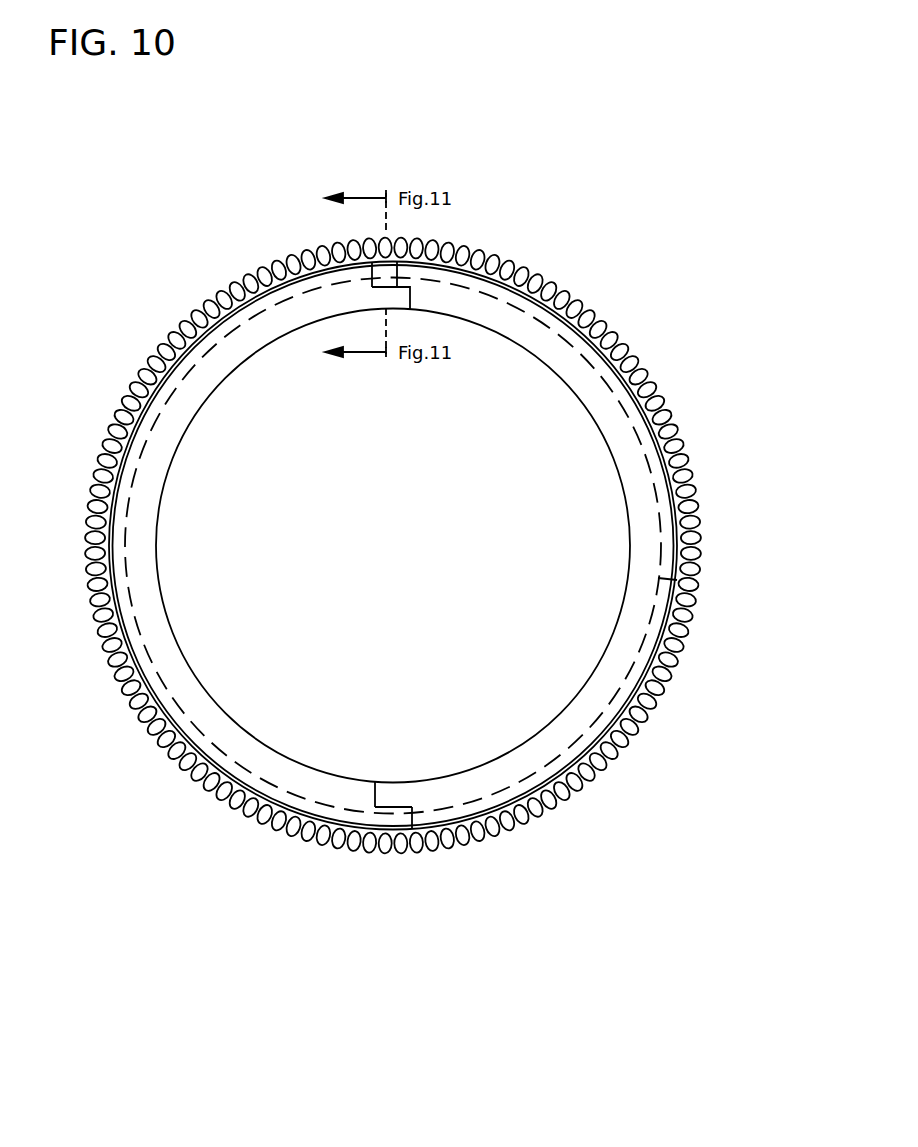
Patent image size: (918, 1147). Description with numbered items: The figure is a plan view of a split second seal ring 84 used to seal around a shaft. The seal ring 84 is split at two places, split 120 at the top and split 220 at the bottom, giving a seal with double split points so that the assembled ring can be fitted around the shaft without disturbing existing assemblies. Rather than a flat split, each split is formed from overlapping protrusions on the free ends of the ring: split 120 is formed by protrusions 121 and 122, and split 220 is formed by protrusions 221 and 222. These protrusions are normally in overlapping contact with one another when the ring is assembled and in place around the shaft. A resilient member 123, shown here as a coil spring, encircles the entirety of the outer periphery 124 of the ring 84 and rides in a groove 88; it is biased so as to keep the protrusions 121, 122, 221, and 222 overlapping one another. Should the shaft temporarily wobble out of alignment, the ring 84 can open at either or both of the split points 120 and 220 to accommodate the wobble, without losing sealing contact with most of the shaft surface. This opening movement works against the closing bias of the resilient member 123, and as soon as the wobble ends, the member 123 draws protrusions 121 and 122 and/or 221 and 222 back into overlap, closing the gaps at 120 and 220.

The seal ring 84 is at (688, 328).
The groove 88 is at (677, 580).
The split 120 is at (401, 247).
The protrusion 121 is at (400, 297).
The protrusion 122 is at (372, 277).
The resilient member 123 is at (686, 452).
The outer periphery 124 is at (573, 307).
The split 220 is at (378, 785).
The protrusion 222 is at (392, 795).
The protrusion 221 is at (397, 824).